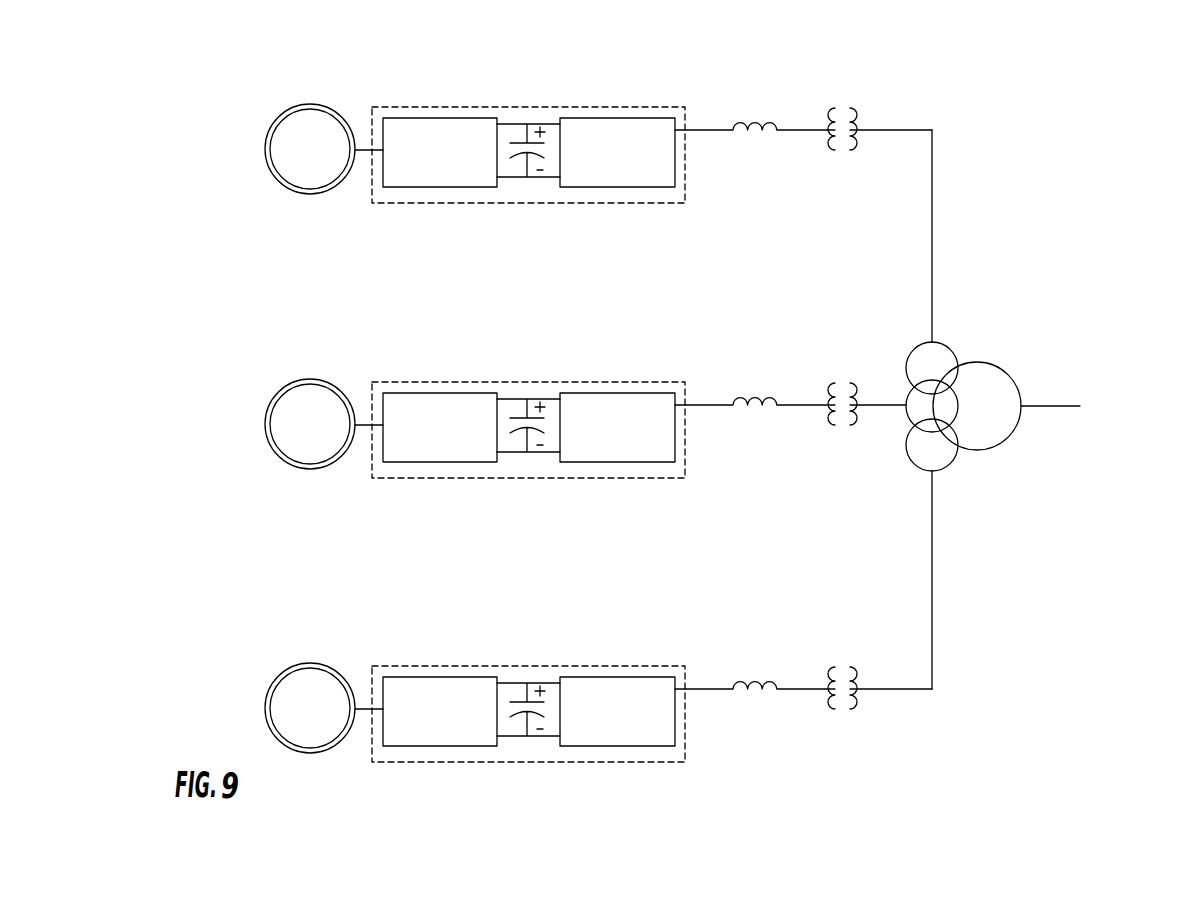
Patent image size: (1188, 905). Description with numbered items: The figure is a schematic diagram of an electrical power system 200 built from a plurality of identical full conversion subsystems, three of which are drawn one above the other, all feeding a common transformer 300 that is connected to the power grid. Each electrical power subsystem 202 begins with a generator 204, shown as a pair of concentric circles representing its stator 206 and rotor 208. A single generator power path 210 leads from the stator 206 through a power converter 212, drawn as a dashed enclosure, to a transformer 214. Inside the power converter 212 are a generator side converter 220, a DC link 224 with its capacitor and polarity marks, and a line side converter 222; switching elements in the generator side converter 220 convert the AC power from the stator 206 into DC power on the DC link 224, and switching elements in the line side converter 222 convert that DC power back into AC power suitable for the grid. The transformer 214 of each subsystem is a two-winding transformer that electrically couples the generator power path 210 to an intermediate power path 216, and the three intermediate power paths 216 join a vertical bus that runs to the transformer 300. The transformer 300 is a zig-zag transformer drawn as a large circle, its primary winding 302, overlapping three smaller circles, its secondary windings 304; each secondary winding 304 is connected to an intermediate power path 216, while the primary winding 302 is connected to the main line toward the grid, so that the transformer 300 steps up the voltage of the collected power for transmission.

The electrical power system 200 is at (774, 62).
The electrical power subsystem 202 is at (528, 441).
The generator 204 is at (324, 399).
The stator 206 is at (313, 104).
The rotor 208 is at (288, 115).
The generator power path 210 is at (702, 128).
The power converter 212 is at (485, 213).
The transformer 214 is at (847, 90).
The intermediate power path 216 is at (883, 134).
The generator side converter 220 is at (460, 198).
The line side converter 222 is at (605, 196).
The DC link 224 is at (548, 188).
The transformer 300 is at (1017, 380).
The primary winding 302 is at (998, 367).
The secondary winding 304 is at (950, 343).